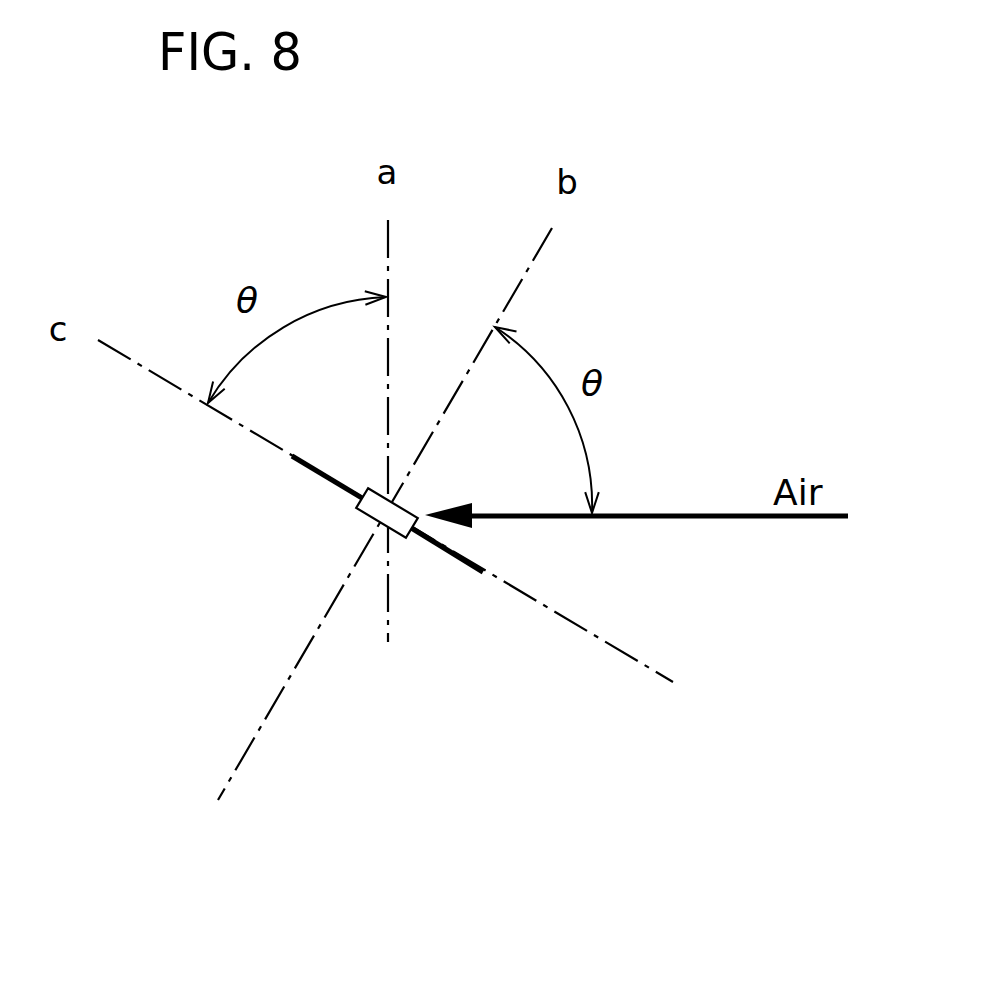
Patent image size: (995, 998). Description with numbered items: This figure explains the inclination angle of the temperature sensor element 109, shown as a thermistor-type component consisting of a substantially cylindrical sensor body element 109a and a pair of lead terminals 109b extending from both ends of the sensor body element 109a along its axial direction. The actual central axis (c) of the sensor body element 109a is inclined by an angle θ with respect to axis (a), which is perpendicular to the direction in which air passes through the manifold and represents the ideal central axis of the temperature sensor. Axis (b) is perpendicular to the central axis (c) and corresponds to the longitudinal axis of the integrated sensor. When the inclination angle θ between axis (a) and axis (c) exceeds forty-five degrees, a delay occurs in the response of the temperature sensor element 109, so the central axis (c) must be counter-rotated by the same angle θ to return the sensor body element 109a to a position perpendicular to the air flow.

The temperature sensor element 109 is at (462, 663).
The sensor body element 109a is at (398, 535).
The lead terminals 109b is at (455, 565).